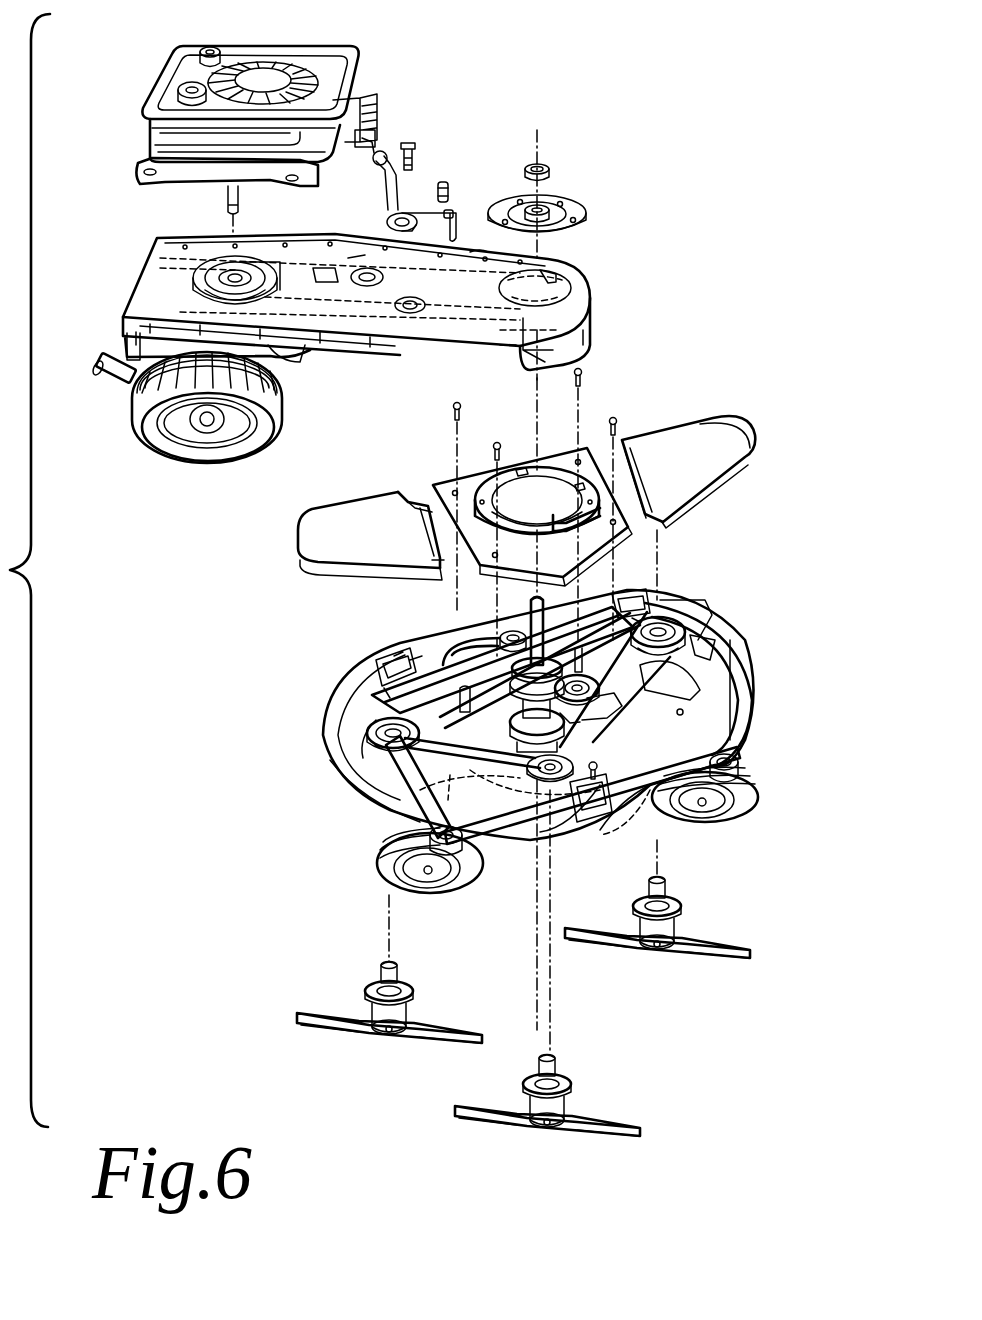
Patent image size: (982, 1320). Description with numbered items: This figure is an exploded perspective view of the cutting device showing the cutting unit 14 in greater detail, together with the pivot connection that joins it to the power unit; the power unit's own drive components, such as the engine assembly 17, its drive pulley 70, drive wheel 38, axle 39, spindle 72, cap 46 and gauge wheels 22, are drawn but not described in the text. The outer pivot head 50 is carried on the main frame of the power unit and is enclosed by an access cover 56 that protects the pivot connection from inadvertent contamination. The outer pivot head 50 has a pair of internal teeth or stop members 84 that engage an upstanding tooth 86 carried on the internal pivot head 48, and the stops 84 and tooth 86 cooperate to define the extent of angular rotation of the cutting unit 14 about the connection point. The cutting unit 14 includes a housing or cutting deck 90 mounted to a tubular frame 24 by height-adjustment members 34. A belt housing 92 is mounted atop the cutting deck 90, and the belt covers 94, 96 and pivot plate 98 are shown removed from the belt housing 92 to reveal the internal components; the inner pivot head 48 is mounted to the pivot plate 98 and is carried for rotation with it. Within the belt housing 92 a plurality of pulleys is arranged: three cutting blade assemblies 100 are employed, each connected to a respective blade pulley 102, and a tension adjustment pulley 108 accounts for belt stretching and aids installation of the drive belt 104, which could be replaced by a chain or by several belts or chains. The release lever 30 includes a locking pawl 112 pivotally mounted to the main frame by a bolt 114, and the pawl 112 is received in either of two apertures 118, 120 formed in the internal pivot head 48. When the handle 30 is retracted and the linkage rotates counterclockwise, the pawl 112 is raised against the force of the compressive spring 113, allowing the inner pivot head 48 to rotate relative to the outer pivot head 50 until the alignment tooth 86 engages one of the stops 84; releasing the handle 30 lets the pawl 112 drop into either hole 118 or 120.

The cutting unit 14 is at (767, 750).
The frame housing 17 is at (132, 257).
The gauge wheel 22 is at (470, 640).
The tubular frame 24 is at (755, 655).
The release lever 30 is at (388, 166).
The height-adjustment members 34 is at (383, 662).
The drive wheel 38 is at (258, 420).
The axle 39 is at (105, 380).
The cap 46 is at (550, 167).
The internal pivot head 48 is at (538, 528).
The outer pivot head 50 is at (555, 322).
The access cover 56 is at (583, 215).
The drive pulley 70 is at (356, 308).
The spindle assembly 72 is at (502, 728).
The stop members 84 is at (565, 280).
The upstanding tooth 86 is at (565, 515).
The cutting deck 90 is at (355, 738).
The belt housing 92 is at (380, 718).
The belt cover 94 is at (345, 547).
The belt cover 96 is at (723, 452).
The pivot plate 98 is at (448, 488).
The cutting blade assemblies 100 is at (672, 922).
The blade pulley 102 is at (700, 635).
The drive belt 104 is at (470, 760).
The tension adjustment pulley 108 is at (598, 688).
The locking pawl 112 is at (454, 216).
The compressive spring 113 is at (446, 180).
The bolt 114 is at (410, 143).
The aperture 118 is at (520, 470).
The aperture 120 is at (580, 485).